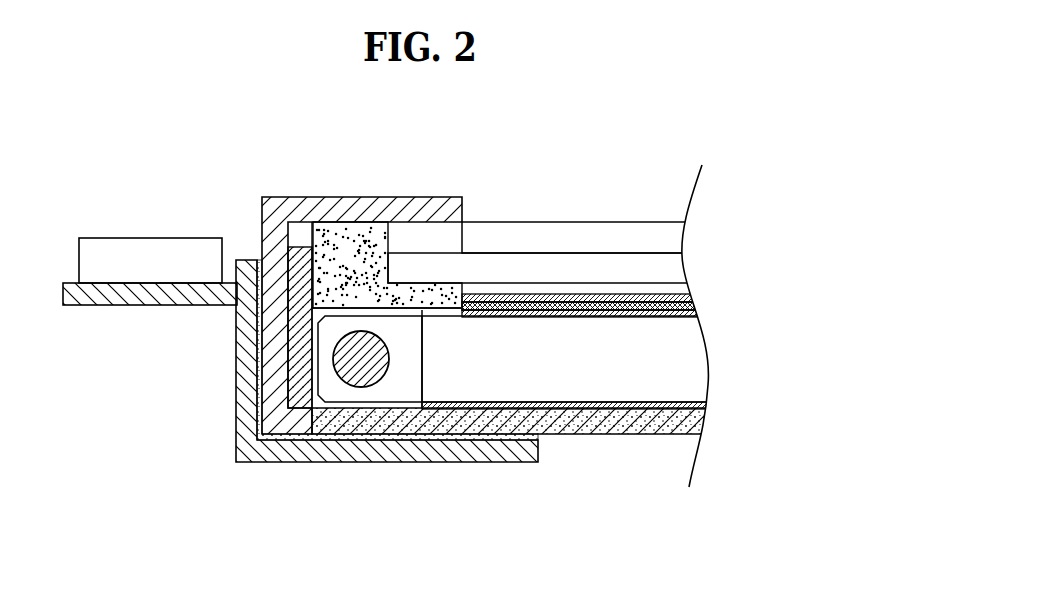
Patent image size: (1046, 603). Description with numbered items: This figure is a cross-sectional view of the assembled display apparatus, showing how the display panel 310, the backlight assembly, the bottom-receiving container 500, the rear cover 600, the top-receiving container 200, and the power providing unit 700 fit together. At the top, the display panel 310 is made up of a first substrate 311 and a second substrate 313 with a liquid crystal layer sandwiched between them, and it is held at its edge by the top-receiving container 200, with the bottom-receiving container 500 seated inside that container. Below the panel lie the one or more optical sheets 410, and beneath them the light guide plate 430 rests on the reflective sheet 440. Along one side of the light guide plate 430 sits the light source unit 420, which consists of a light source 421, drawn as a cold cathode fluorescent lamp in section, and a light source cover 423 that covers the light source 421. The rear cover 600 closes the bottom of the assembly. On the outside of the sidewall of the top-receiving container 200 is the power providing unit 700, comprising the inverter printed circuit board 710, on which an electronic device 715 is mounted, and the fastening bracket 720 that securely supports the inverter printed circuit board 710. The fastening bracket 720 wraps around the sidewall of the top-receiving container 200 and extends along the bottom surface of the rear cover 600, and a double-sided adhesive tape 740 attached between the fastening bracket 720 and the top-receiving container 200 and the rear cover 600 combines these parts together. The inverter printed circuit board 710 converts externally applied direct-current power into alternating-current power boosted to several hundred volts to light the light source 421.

The top-receiving container 200 is at (408, 207).
The display panel 310 is at (555, 197).
The first substrate 311 is at (538, 262).
The second substrate 313 is at (577, 238).
The optical sheets 410 is at (695, 294).
The light source unit 420 is at (381, 403).
The light source 421 is at (384, 367).
The light source cover 423 is at (382, 408).
The light guide plate 430 is at (703, 358).
The reflective sheet 440 is at (708, 405).
The bottom-receiving container 500 is at (343, 232).
The rear cover 600 is at (567, 436).
The power providing unit 700 is at (298, 311).
The inverter printed circuit board 710 is at (132, 300).
The electronic device 715 is at (135, 248).
The fastening bracket 720 is at (237, 398).
The double-sided adhesive tape 740 is at (332, 441).